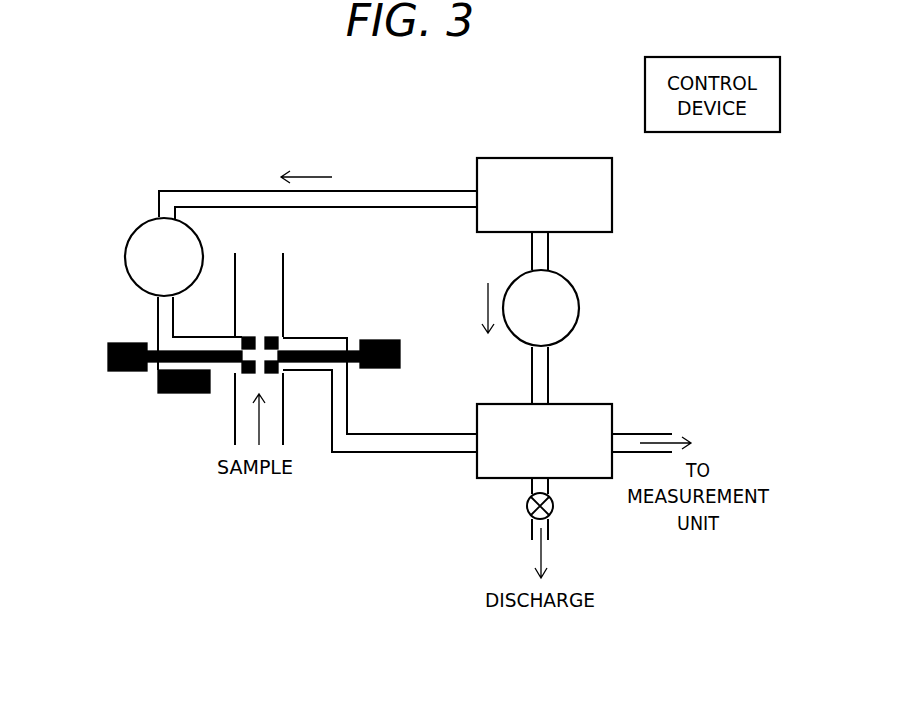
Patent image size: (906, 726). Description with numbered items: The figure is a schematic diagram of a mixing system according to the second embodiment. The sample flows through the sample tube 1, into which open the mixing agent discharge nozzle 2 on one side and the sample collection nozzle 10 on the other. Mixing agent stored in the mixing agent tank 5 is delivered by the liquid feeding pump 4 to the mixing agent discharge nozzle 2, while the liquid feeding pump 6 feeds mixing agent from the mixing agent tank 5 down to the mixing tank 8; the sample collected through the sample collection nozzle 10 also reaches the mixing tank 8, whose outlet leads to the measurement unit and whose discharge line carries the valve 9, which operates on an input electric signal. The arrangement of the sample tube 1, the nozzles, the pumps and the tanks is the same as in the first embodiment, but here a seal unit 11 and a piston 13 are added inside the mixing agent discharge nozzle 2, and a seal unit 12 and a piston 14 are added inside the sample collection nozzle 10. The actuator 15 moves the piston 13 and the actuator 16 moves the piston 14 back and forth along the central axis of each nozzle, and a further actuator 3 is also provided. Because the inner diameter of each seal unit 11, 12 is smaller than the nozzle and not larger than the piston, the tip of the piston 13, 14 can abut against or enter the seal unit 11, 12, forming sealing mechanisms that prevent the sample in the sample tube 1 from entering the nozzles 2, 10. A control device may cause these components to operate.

The sample tube 1 is at (233, 428).
The mixing agent discharge nozzle 2 is at (230, 380).
The actuator 3 is at (173, 393).
The liquid feeding pump 4 is at (134, 232).
The mixing agent tank 5 is at (545, 158).
The liquid feeding pump 6 is at (579, 303).
The mixing tank 8 is at (588, 404).
The valve 9 is at (553, 516).
The sample collection nozzle 10 is at (293, 373).
The seal unit 11 is at (243, 337).
The seal unit 12 is at (273, 337).
The piston 13 is at (170, 340).
The piston 14 is at (313, 348).
The actuator 15 is at (112, 370).
The actuator 16 is at (382, 368).